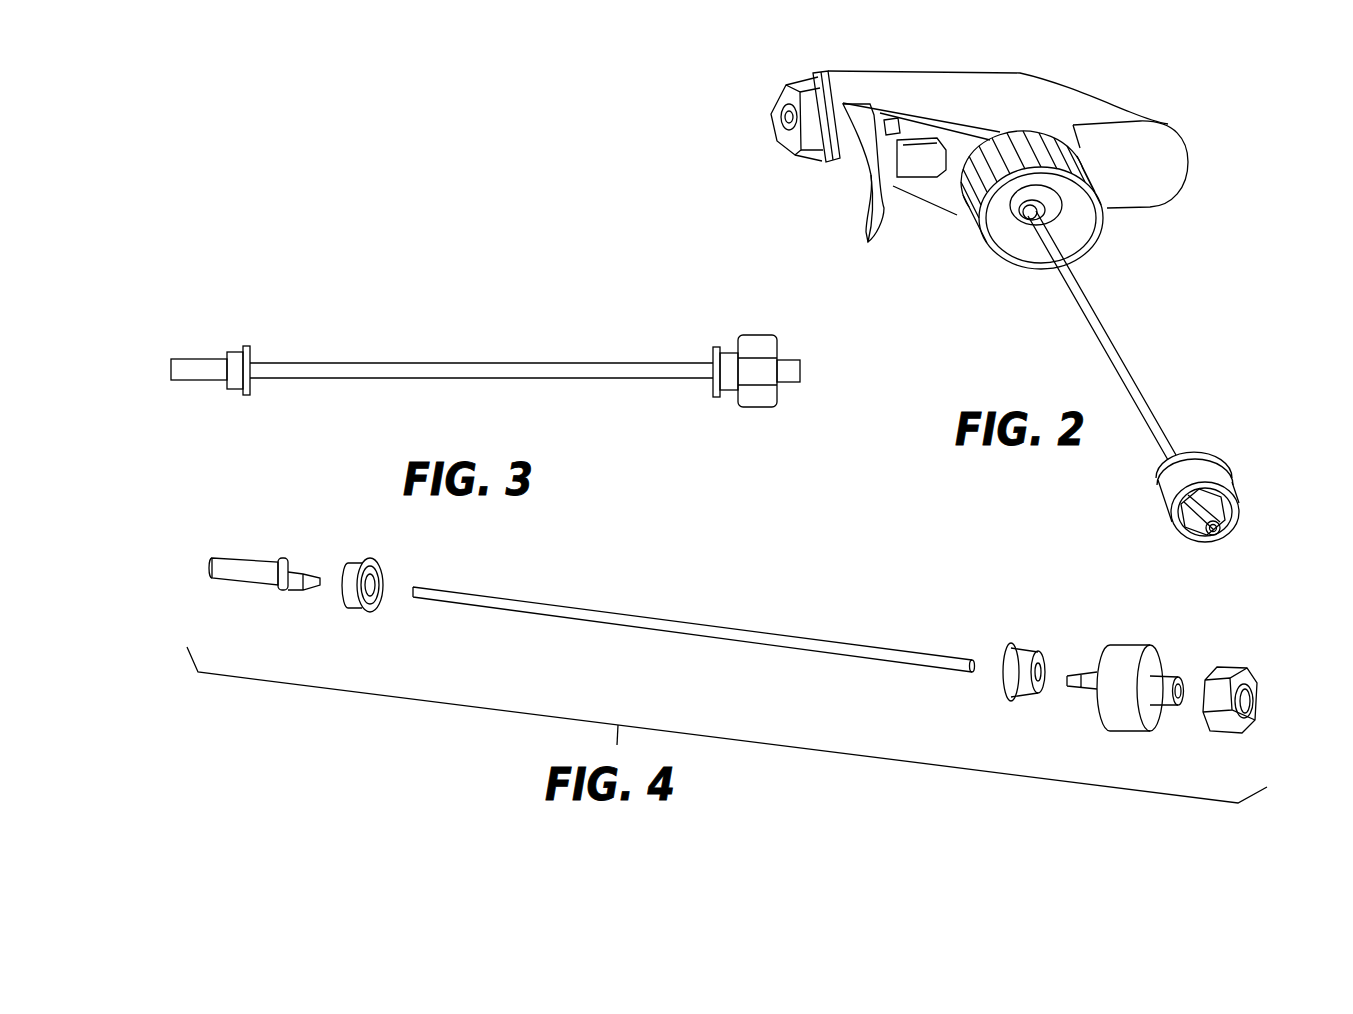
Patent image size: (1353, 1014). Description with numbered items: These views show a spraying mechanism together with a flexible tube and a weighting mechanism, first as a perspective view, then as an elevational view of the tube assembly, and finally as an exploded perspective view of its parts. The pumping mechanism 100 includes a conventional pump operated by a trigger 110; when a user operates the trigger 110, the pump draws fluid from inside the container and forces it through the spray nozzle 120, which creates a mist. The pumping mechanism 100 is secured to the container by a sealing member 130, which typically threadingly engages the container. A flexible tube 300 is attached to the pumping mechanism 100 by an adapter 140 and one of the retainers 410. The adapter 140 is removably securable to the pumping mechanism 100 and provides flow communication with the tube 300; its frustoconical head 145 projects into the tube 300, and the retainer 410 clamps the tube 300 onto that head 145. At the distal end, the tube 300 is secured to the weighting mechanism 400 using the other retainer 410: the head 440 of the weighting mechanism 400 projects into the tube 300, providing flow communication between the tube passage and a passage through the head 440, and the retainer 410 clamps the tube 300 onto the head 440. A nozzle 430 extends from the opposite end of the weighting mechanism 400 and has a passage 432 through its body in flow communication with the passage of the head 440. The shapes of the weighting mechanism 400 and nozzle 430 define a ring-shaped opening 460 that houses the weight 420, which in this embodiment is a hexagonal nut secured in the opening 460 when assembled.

In FIG. 2, the pumping mechanism 100 is at (1090, 91).
In FIG. 2, the trigger 110 is at (853, 202).
In FIG. 2, the spray nozzle 120 is at (782, 122).
In FIG. 2, the sealing member 130 is at (1096, 240).
In FIG. 3, the adapter 140 is at (200, 356).
In FIG. 4, the adapter 140 is at (245, 582).
In FIG. 4, the frustoconical head 145 is at (318, 572).
In FIG. 2, the flexible tube 300 is at (1122, 352).
In FIG. 3, the flexible tube 300 is at (470, 380).
In FIG. 4, the flexible tube 300 is at (661, 632).
In FIG. 2, the weighting mechanism 400 is at (1240, 486).
In FIG. 3, the weighting mechanism 400 is at (752, 408).
In FIG. 4, the weighting mechanism 400 is at (1120, 733).
In FIG. 2, the retainer 410 is at (996, 250).
In FIG. 3, the retainer 410 is at (233, 395).
In FIG. 4, the retainer 410 is at (350, 606).
In FIG. 2, the weight 420 is at (1185, 532).
In FIG. 4, the weight 420 is at (1226, 736).
In FIG. 2, the nozzle 430 is at (1222, 536).
In FIG. 3, the nozzle 430 is at (790, 384).
In FIG. 4, the nozzle 430 is at (1186, 678).
In FIG. 4, the passage 432 is at (1190, 688).
In FIG. 4, the head 440 is at (1076, 670).
In FIG. 4, the ring-shaped opening 460 is at (1153, 708).